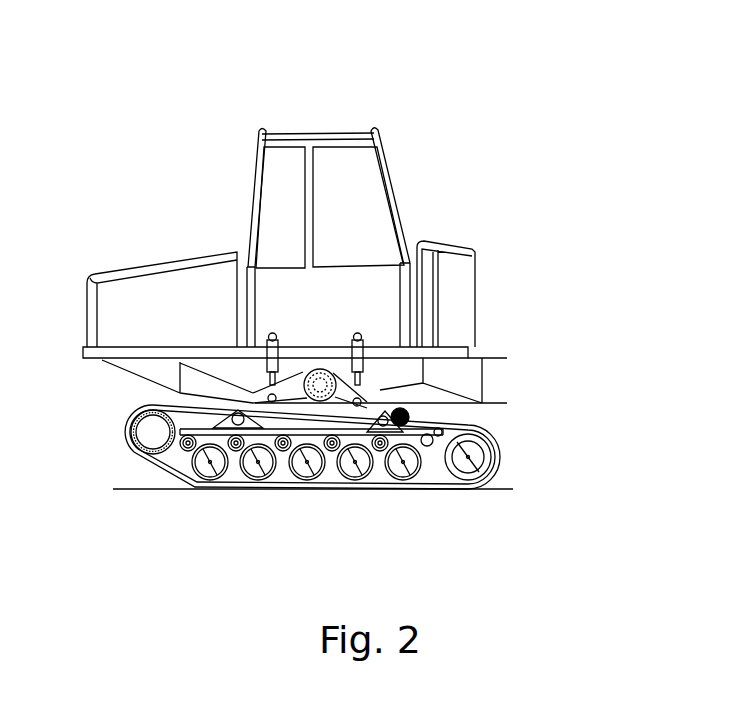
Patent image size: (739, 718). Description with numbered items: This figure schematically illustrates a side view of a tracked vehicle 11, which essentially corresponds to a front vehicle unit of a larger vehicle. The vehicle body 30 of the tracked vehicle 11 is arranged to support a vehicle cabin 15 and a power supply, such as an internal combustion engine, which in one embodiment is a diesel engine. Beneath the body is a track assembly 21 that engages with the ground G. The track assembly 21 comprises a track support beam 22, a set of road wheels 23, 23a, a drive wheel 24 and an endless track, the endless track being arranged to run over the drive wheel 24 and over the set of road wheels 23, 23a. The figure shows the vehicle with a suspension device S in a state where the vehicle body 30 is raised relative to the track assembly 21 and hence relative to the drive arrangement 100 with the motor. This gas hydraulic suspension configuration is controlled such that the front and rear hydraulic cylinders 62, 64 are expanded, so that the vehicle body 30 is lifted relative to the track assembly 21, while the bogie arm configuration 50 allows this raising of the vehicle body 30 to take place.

The tracked vehicle 11 is at (405, 123).
The vehicle cabin 15 is at (313, 131).
The suspension device S is at (308, 358).
The bogie arm configuration 50 is at (322, 365).
The front hydraulic cylinder 62 is at (263, 364).
The rear hydraulic cylinder 64 is at (366, 366).
The vehicle body 30 is at (133, 378).
The track assembly 21 is at (486, 422).
The track support beam 22 is at (410, 426).
The road wheels 23 is at (233, 474).
The road wheel 23a is at (497, 467).
The drive wheel 24 is at (127, 433).
The drive arrangement 100 is at (151, 437).
The ground G is at (175, 489).